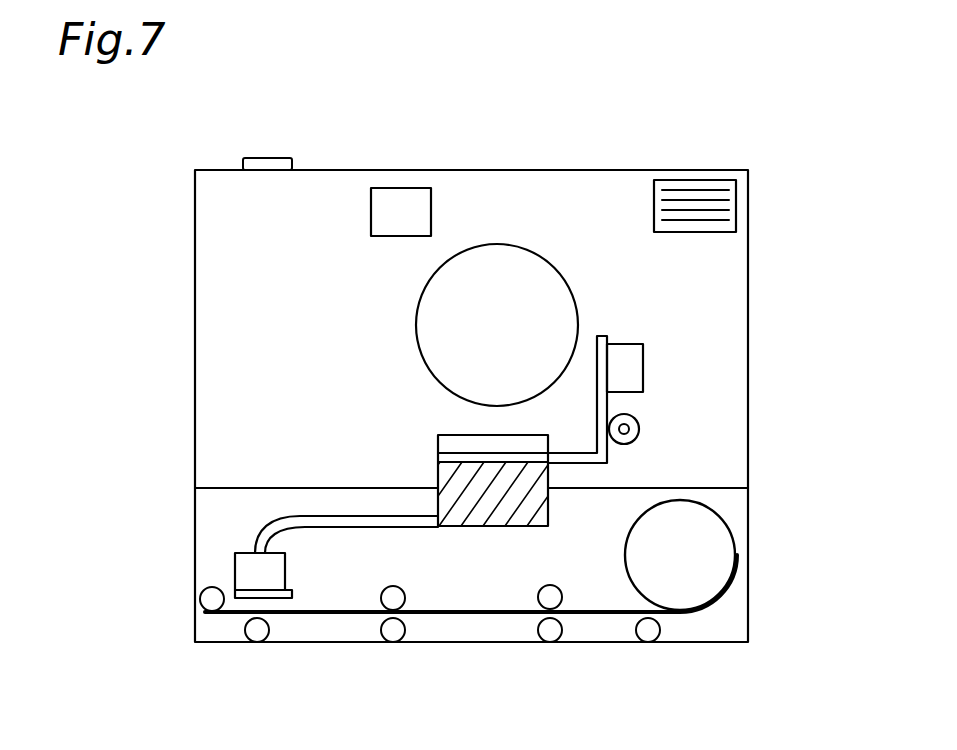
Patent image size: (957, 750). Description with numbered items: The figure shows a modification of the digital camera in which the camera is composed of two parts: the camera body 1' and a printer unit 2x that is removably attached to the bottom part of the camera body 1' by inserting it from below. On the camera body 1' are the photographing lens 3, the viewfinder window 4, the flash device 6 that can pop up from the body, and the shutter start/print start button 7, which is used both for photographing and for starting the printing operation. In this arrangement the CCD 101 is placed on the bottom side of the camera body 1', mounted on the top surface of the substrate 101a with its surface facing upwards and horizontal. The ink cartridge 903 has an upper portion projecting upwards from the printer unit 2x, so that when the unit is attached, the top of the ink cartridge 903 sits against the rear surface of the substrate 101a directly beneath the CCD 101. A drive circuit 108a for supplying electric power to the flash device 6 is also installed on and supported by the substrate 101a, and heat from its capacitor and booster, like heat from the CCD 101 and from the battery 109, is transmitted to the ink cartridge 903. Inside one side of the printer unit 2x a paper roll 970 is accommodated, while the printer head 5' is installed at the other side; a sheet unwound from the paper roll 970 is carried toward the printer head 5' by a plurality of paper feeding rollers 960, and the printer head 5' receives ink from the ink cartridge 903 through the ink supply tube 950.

The camera body 1' is at (522, 406).
The printer unit 2x is at (750, 531).
The photographing lens 3 is at (512, 283).
The viewfinder window 4 is at (402, 205).
The printer head 5' is at (202, 573).
The flash device 6 is at (712, 195).
The shutter start/print start button 7 is at (270, 158).
The CCD 101 is at (455, 435).
The substrate 101a is at (438, 460).
The drive circuit 108a is at (643, 368).
The battery 109 is at (639, 428).
The ink cartridge 903 is at (492, 515).
The ink supply tube 950 is at (240, 520).
The paper feeding rollers 960 is at (200, 602).
The paper roll 970 is at (695, 555).